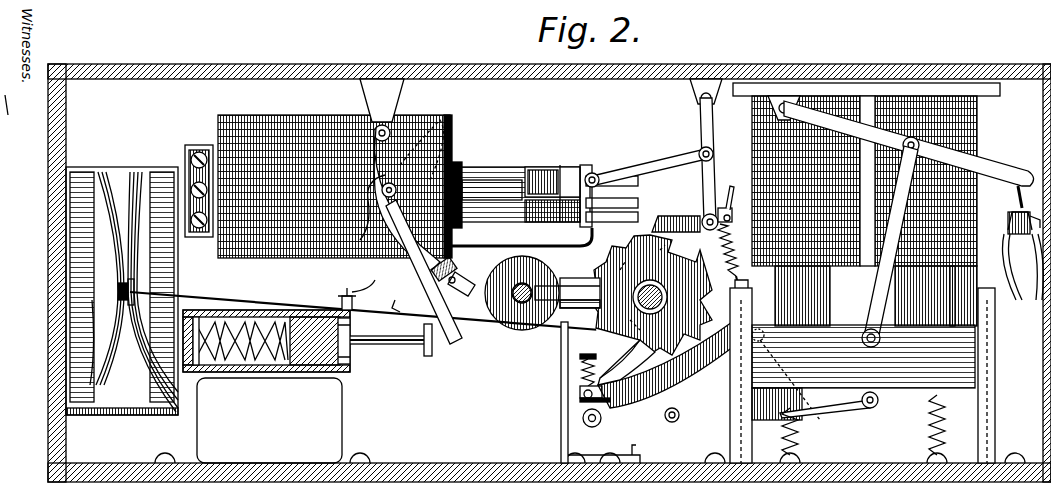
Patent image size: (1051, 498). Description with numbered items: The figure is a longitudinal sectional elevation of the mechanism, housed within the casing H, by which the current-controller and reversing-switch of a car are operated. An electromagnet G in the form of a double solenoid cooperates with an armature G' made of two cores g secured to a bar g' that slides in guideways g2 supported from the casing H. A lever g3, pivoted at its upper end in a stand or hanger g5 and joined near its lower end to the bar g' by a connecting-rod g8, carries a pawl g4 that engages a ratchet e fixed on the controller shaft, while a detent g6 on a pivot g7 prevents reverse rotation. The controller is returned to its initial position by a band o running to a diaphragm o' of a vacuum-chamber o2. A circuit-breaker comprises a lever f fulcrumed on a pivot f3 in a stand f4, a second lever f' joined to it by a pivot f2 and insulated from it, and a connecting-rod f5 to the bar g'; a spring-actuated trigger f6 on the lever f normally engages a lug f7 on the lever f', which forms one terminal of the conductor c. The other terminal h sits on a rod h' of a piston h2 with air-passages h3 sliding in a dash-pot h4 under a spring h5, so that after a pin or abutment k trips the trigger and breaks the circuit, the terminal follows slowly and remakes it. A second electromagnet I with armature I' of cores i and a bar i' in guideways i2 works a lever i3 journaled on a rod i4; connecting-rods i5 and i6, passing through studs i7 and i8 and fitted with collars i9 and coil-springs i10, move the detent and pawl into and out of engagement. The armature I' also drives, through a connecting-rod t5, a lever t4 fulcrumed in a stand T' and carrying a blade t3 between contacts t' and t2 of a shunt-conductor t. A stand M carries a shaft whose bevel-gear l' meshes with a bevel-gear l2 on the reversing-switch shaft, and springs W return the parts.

The casing H is at (600, 80).
The band o is at (333, 291).
The diaphragm o' is at (148, 292).
The vacuum-chamber o2 is at (109, 278).
The electromagnet G is at (335, 174).
The armature G' is at (522, 184).
The core g is at (492, 171).
The bar g' is at (560, 182).
The guideways g2 is at (640, 190).
The lever g3 is at (716, 186).
The pawl g4 is at (678, 216).
The stand or hanger g5 is at (694, 92).
The detent g6 is at (640, 380).
The pivot g7 is at (666, 420).
The connecting-rod g8 is at (648, 162).
The lever f is at (483, 236).
The lever f' is at (366, 228).
The pivot f2 is at (421, 150).
The pivot f3 is at (390, 125).
The stand f4 is at (370, 104).
The connecting-rod f5 is at (565, 248).
The trigger f6 is at (470, 290).
The lug f7 is at (447, 292).
The ratchet e is at (656, 297).
The disk P is at (512, 312).
The bevel-gear l' is at (580, 280).
The bevel-gear l2 is at (520, 304).
The stand M is at (562, 396).
The core i is at (876, 296).
The bar i' is at (888, 397).
The guideways i2 is at (730, 378).
The lever i3 is at (695, 366).
The rod i4 is at (688, 420).
The connecting-rod i5 is at (583, 414).
The connecting-rod i6 is at (748, 280).
The stud i7 is at (733, 202).
The stud i8 is at (580, 386).
The collar i9 is at (731, 277).
The coil-spring i10 is at (728, 250).
The electromagnet I is at (860, 181).
The armature I' is at (863, 372).
The spring W is at (876, 429).
The shunt-conductor t is at (1023, 270).
The contact t' is at (1009, 223).
The contact t2 is at (1038, 211).
The blade t3 is at (1022, 184).
The lever t4 is at (990, 162).
The connecting-rod t5 is at (876, 300).
The terminal T' is at (1012, 206).
The terminal h is at (430, 347).
The rod h' is at (383, 351).
The piston h2 is at (305, 374).
The air-passages h3 is at (304, 318).
The cylinder or dash-pot h4 is at (226, 372).
The spring h5 is at (262, 372).
The conductor c is at (360, 284).
The pin or abutment k is at (397, 297).